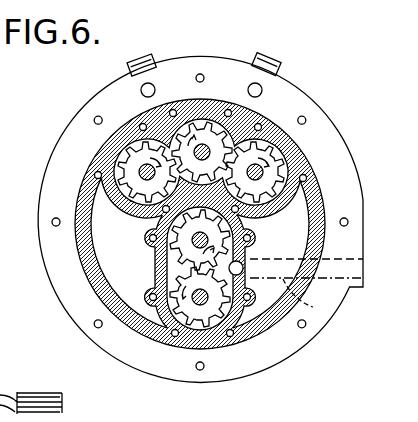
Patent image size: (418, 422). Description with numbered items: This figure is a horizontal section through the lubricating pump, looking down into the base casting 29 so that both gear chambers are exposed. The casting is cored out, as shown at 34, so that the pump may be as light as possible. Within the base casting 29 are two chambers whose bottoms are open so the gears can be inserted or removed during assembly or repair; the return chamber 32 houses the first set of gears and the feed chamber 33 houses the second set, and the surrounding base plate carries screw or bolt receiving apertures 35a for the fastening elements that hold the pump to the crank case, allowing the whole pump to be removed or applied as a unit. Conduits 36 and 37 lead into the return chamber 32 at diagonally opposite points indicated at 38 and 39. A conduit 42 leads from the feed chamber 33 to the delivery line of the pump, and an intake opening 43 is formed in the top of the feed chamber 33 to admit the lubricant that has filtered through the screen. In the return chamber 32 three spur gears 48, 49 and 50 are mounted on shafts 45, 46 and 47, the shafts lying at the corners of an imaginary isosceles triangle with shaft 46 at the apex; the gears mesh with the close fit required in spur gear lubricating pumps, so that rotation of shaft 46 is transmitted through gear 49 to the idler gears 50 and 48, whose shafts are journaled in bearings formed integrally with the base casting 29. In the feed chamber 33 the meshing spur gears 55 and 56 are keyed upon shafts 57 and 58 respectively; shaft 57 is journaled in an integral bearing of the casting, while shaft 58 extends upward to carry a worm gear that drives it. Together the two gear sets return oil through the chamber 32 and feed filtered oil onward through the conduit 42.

The base casting 29 is at (310, 158).
The return chamber 32 is at (203, 103).
The feed chamber 33 is at (184, 335).
The cored-out portion 34 is at (111, 221).
The screw or bolt receiving apertures 35a is at (97, 329).
The conduit 36 is at (137, 78).
The conduit 37 is at (279, 70).
The conduit entry point 38 is at (146, 123).
The conduit entry point 39 is at (240, 212).
The conduit 42 is at (301, 288).
The intake opening 43 is at (148, 295).
The shaft 45 is at (145, 165).
The shaft 46 is at (205, 148).
The shaft 47 is at (322, 202).
The spur gear 48 is at (82, 188).
The spur gear 49 is at (261, 124).
The spur gear 50 is at (301, 146).
The spur gear 55 is at (156, 227).
The spur gear 56 is at (188, 333).
The shaft 57 is at (192, 250).
The shaft 58 is at (203, 300).